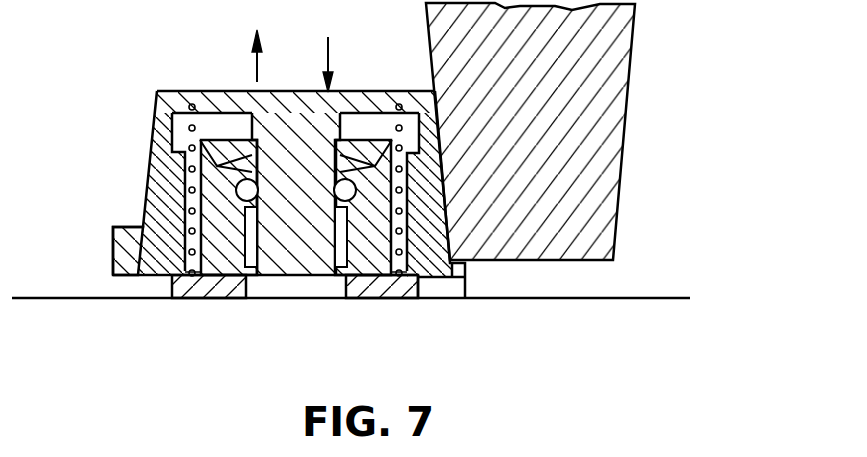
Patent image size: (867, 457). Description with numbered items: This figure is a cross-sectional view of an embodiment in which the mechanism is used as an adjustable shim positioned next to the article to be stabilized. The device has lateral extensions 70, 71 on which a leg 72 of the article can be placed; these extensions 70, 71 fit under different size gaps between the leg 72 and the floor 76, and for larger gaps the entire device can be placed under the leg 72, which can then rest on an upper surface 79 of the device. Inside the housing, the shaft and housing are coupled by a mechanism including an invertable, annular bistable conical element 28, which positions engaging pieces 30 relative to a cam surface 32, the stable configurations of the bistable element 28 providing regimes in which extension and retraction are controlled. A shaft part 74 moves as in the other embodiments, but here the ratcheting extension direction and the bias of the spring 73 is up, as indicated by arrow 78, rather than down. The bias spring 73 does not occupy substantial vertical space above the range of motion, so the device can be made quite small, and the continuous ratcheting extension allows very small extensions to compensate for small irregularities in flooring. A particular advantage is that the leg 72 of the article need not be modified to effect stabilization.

The bistable conical element 28 is at (342, 116).
The engaging pieces 30 is at (196, 147).
The cam surface 32 is at (212, 178).
The lateral extension 70 is at (471, 282).
The lateral extension 71 is at (113, 282).
The leg 72 is at (620, 193).
The spring 73 is at (160, 200).
The shaft part 74 is at (312, 278).
The floor 76 is at (690, 297).
The arrow 78 is at (254, 62).
The upper surface 79 is at (290, 100).